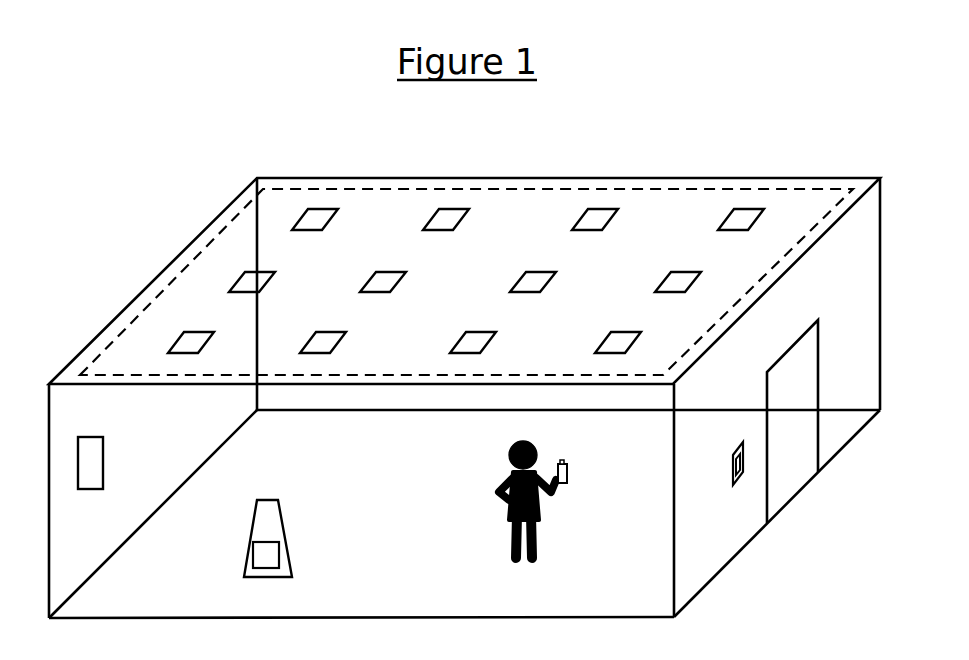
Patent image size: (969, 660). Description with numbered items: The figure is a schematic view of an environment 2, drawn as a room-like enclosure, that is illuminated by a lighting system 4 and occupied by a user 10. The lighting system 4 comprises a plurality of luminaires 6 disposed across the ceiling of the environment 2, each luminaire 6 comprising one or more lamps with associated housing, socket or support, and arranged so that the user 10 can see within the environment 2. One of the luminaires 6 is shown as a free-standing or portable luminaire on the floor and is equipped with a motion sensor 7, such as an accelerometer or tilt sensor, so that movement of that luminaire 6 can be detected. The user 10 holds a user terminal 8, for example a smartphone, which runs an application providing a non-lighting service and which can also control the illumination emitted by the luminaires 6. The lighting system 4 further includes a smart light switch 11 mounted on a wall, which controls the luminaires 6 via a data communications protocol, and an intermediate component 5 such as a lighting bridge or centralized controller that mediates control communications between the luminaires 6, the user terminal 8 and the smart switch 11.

The environment 2 is at (718, 178).
The lighting system 4 is at (565, 188).
The intermediate component 5 is at (104, 468).
The luminaire 6 is at (612, 219).
The motion sensor 7 is at (266, 555).
The user terminal 8 is at (568, 471).
The user 10 is at (513, 518).
The smart light switch 11 is at (732, 470).